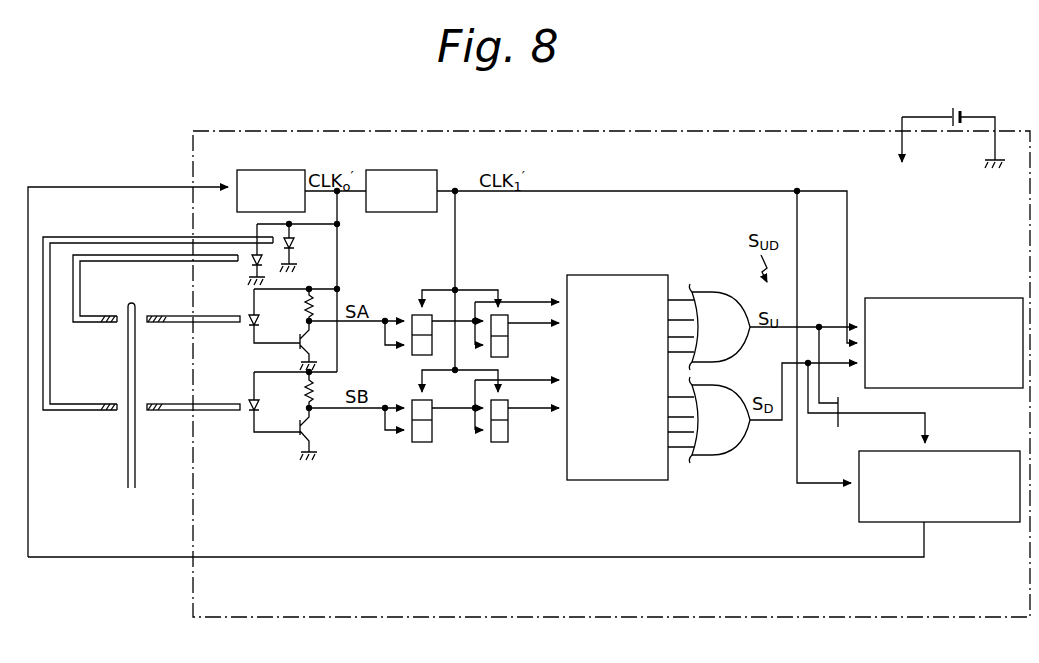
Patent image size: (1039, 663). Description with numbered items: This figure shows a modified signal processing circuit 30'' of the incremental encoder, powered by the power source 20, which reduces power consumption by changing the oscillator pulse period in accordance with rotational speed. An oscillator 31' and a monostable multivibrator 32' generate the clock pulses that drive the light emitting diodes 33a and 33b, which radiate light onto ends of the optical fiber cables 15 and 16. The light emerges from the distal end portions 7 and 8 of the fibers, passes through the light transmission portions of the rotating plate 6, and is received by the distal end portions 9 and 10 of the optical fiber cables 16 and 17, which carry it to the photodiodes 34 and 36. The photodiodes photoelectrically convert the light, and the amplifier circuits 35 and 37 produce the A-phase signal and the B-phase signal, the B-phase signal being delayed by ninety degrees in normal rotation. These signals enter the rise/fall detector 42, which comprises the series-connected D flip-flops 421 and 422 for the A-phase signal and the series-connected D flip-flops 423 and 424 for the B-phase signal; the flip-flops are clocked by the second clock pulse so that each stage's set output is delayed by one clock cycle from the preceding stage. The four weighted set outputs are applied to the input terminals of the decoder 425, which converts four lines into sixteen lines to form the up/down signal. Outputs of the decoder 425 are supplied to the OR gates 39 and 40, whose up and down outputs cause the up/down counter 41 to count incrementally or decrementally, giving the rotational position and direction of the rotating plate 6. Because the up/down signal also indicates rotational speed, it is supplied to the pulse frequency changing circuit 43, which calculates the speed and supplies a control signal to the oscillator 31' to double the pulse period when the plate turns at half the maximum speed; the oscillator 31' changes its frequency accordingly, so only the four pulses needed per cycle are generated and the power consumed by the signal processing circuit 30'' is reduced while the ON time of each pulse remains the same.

The signal processing circuit 30'' is at (611, 352).
The oscillator 31' is at (271, 176).
The monostable multivibrator 32' is at (401, 176).
The light emitting diode 33a is at (245, 268).
The light emitting diode 33b is at (323, 243).
The photodiode 34 is at (267, 298).
The amplifier circuit 35 is at (298, 336).
The photodiode 36 is at (248, 403).
The amplifier circuit 37 is at (299, 411).
The OR gate 39 is at (724, 363).
The OR gate 40 is at (724, 456).
The up/down counter 41 is at (925, 298).
The rise/fall detector 42 is at (528, 349).
The pulse frequency changing circuit 43 is at (950, 452).
The D flip-flop 421 is at (414, 300).
The D flip-flop 422 is at (510, 351).
The D flip-flop 423 is at (420, 445).
The D flip-flop 424 is at (497, 445).
The decoder 425 is at (613, 275).
The power source 20 is at (955, 108).
The optical fiber cable 16 is at (122, 237).
The optical fiber cable 15 is at (77, 323).
The rotating plate 6 is at (130, 302).
The distal end portion 7 is at (110, 323).
The distal end portion 8 is at (109, 404).
The distal end portion 9 is at (156, 315).
The distal end portion 10 is at (155, 404).
The optical fiber cable 17 is at (170, 411).